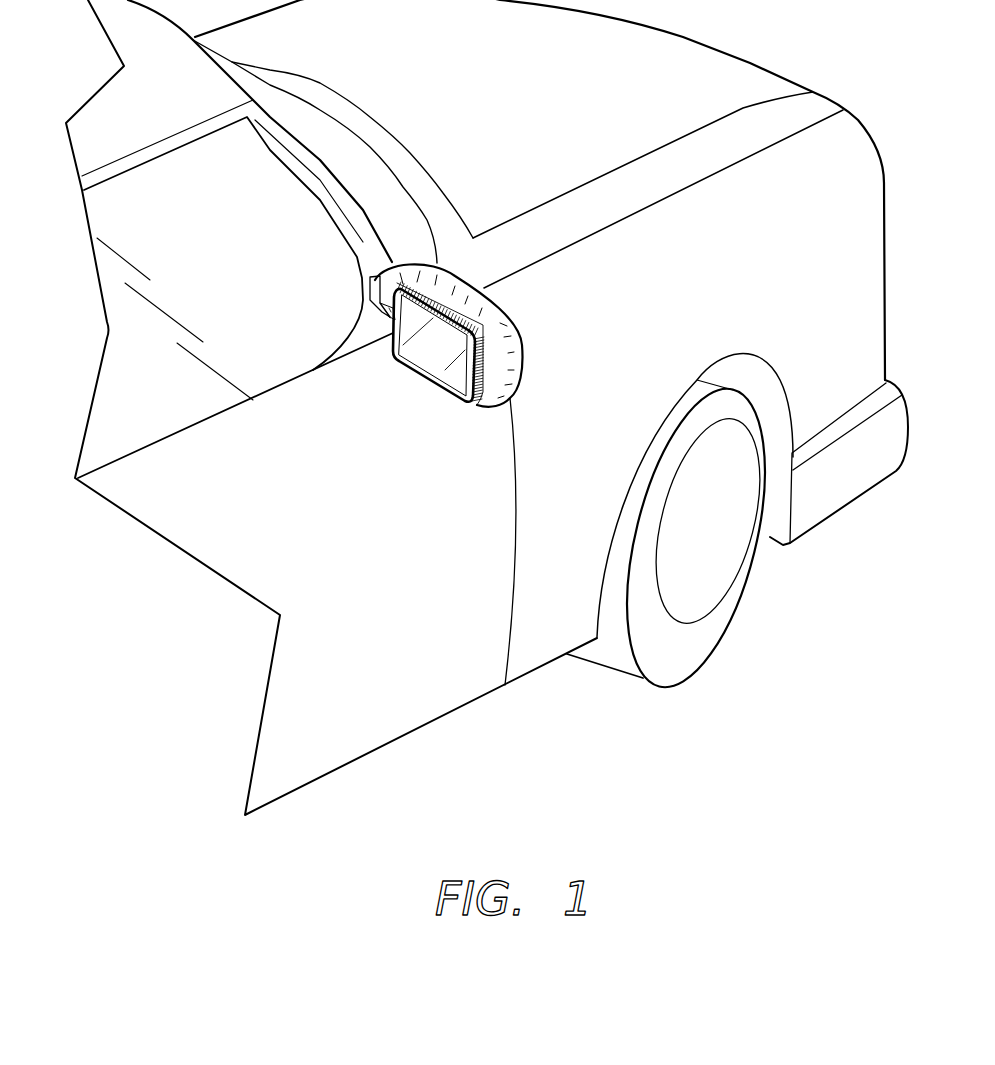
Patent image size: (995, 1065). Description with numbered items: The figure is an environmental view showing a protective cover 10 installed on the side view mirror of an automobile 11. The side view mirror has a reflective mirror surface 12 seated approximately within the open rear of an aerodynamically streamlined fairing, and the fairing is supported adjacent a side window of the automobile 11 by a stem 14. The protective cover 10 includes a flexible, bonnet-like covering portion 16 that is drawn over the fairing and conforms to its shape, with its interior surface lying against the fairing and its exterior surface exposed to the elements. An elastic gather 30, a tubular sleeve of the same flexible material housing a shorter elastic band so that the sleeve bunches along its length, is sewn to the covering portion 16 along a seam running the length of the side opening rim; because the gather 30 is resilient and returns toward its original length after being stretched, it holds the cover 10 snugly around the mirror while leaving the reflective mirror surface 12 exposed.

The protective cover 10 is at (457, 372).
The automobile 11 is at (627, 83).
The reflective mirror surface 12 is at (433, 355).
The stem 14 is at (372, 298).
The bonnet-like covering portion 16 is at (506, 311).
The elastic gather 30 is at (478, 404).